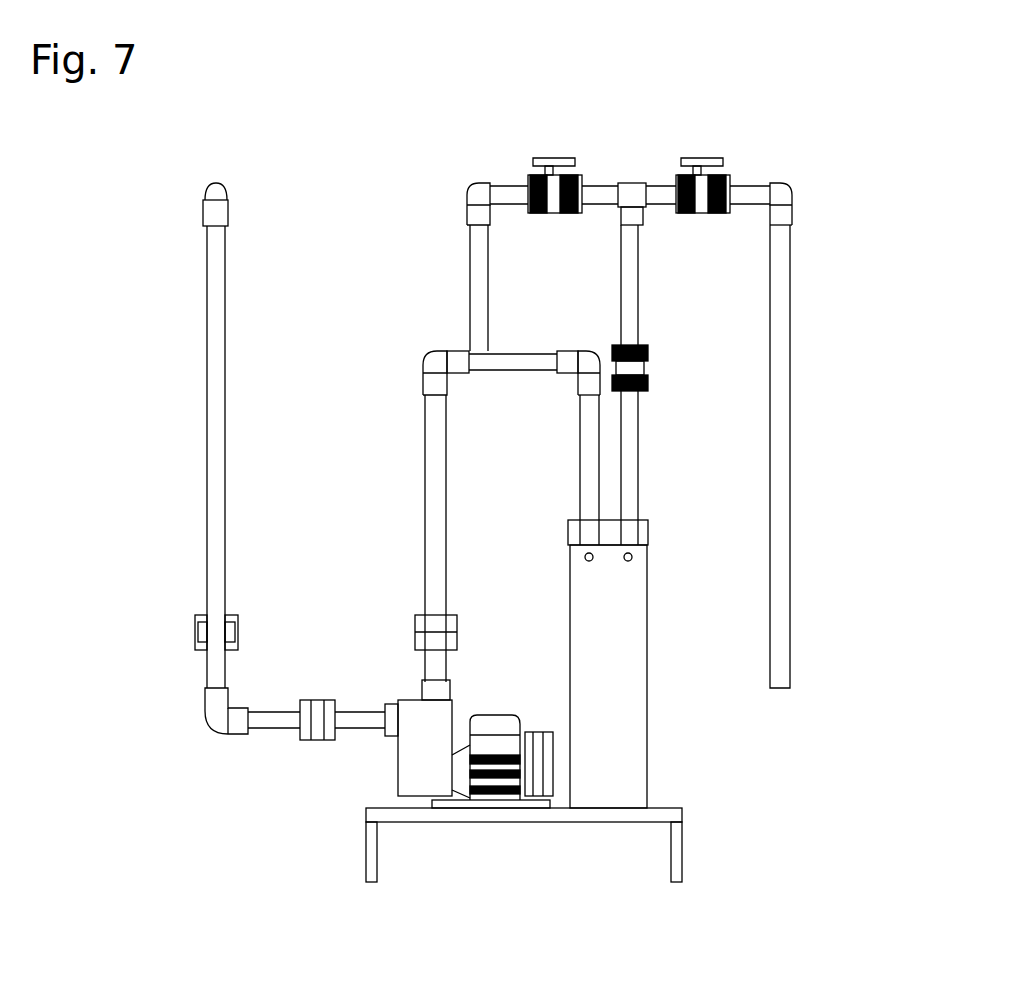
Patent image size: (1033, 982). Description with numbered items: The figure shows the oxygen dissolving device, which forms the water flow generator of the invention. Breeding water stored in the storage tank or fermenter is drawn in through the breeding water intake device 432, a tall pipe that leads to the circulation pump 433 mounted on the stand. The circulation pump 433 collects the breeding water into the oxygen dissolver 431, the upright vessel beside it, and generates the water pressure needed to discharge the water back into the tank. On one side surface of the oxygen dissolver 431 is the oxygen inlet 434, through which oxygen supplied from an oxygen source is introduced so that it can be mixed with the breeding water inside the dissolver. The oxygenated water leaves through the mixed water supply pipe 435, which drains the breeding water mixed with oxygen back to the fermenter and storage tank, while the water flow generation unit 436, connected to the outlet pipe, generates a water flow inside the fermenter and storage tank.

The oxygen dissolver 431 is at (613, 712).
The breeding water intake device 432 is at (214, 363).
The circulation pump 433 is at (482, 762).
The oxygen inlet 434 is at (633, 557).
The mixed water supply pipe 435 is at (630, 270).
The water flow generation unit 436 is at (780, 421).